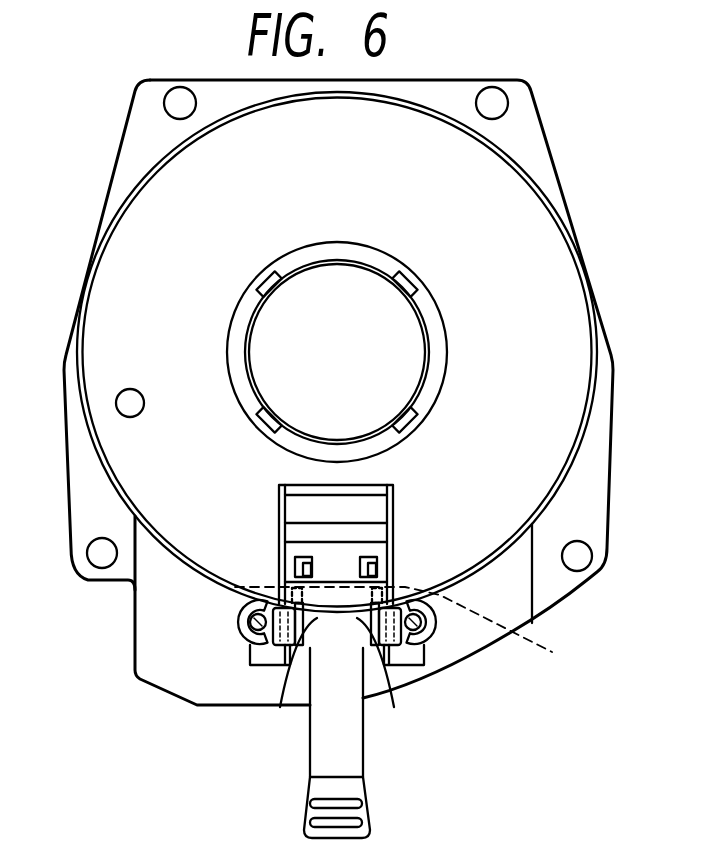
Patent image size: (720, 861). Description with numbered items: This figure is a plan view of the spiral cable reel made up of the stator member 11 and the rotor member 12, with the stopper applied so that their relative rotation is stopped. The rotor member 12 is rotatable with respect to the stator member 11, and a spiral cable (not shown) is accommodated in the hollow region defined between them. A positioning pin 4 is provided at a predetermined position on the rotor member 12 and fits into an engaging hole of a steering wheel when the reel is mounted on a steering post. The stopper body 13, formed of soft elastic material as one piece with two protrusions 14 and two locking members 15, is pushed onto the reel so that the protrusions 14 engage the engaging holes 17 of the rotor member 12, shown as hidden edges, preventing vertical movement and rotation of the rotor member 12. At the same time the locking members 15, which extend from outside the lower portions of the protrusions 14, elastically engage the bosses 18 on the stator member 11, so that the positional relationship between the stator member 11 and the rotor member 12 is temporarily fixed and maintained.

The positioning pin 4 is at (123, 403).
The stator member 11 is at (592, 482).
The rotor member 12 is at (565, 289).
The stopper body 13 is at (350, 757).
The protrusions 14 is at (308, 630).
The locking members 15 is at (240, 637).
The engaging holes 17 is at (263, 585).
The bosses 18 is at (258, 630).